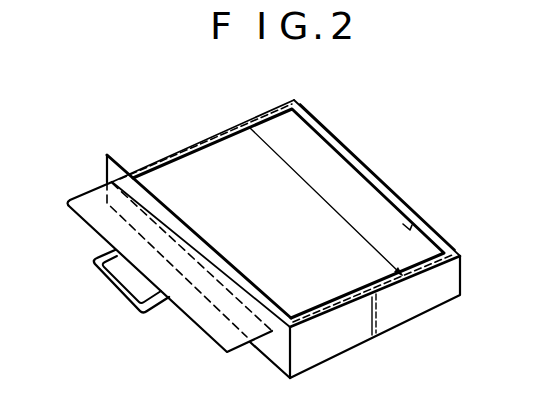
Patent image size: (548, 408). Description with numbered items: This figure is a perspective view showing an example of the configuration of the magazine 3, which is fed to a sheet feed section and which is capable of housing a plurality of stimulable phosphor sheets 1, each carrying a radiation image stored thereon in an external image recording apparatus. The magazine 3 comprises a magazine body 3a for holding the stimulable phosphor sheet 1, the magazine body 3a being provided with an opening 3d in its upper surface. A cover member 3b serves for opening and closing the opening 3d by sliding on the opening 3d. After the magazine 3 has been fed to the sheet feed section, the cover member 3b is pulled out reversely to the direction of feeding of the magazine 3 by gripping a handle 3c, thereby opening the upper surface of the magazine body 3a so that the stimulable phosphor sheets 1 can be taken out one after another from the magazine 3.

The stimulable phosphor sheet 1 is at (277, 112).
The magazine 3 is at (193, 132).
The magazine body 3a is at (337, 139).
The cover member 3b is at (80, 194).
The handle 3c is at (100, 268).
The opening 3d is at (407, 226).